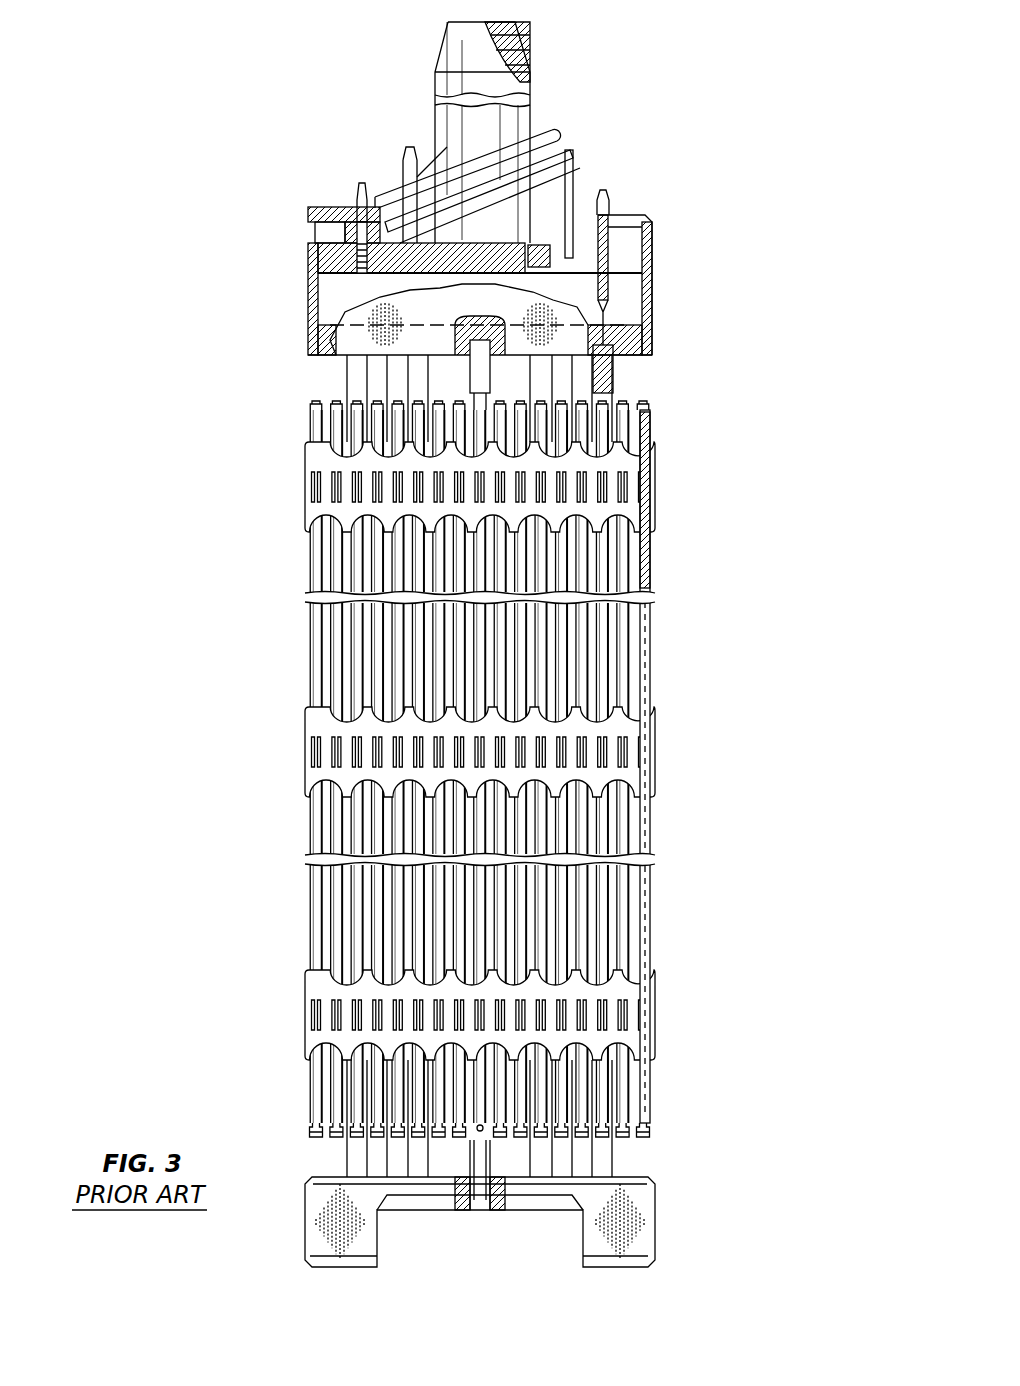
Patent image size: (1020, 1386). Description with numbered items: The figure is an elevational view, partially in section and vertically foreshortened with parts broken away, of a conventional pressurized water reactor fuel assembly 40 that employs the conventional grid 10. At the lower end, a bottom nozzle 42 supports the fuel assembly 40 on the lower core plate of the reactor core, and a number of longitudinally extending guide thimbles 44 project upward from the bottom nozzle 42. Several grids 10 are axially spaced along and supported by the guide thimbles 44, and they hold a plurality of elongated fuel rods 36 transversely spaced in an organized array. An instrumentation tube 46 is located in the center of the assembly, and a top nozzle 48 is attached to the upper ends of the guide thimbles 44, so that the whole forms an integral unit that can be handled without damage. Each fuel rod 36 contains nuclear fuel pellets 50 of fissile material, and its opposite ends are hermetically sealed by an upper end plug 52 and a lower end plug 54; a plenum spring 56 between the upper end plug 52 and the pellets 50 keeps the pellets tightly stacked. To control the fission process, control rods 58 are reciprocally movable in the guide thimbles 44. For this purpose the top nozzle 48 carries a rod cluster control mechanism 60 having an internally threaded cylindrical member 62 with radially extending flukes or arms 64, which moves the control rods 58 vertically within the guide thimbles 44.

The grid 10 is at (305, 490).
The fuel rod 36 is at (316, 565).
The fuel assembly 40 is at (731, 184).
The bottom nozzle 42 is at (655, 1228).
The guide thimble 44 is at (347, 382).
The instrumentation tube 46 is at (483, 1200).
The top nozzle 48 is at (655, 265).
The nuclear fuel pellets 50 is at (650, 636).
The upper end plug 52 is at (316, 422).
The lower end plug 54 is at (316, 1130).
The plenum spring 56 is at (655, 470).
The control rod 58 is at (652, 312).
The rod cluster control mechanism 60 is at (559, 112).
The internally threaded cylindrical member 62 is at (435, 120).
The flukes or arms 64 is at (388, 186).